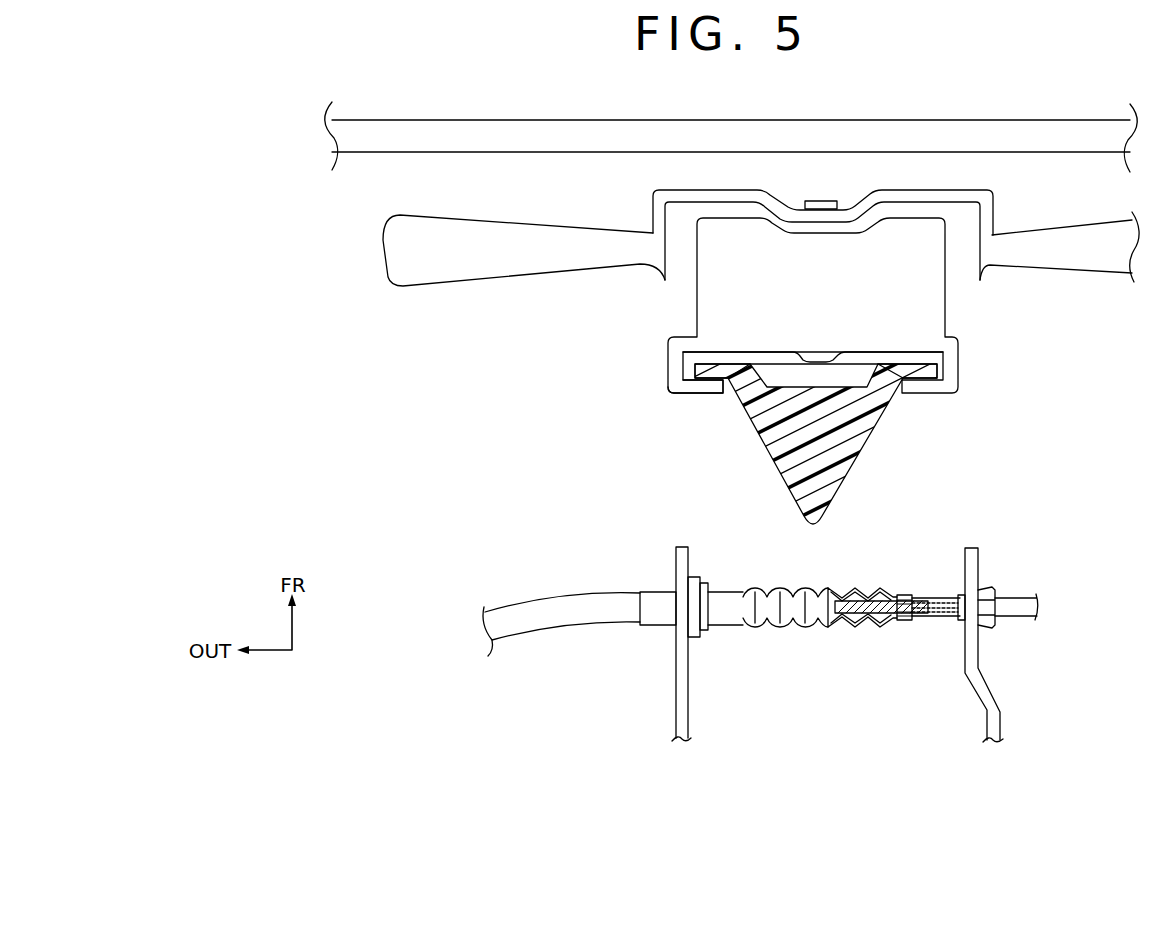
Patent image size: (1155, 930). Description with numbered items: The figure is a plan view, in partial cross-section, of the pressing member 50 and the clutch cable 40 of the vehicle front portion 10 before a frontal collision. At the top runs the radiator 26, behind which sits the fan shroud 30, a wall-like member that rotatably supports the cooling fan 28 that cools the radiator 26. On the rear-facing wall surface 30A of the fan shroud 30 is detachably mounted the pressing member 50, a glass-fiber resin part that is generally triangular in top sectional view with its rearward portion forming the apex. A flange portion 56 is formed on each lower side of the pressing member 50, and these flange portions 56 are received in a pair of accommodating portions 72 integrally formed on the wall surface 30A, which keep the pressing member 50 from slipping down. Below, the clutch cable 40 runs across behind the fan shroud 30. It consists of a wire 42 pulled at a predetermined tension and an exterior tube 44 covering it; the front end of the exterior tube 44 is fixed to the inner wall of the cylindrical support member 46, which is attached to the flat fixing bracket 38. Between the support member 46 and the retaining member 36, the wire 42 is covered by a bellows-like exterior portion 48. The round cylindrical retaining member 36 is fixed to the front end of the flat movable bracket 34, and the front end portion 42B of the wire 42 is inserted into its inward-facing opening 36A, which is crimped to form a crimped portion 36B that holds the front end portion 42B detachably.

The vehicle front portion 10 is at (1026, 446).
The radiator 26 is at (817, 121).
The cooling fan 28 is at (432, 265).
The fan shroud 30 is at (831, 316).
The wall surface 30A is at (778, 361).
The movable bracket 34 is at (977, 547).
The retaining member 36 is at (936, 619).
The opening 36A is at (887, 617).
The crimped portion 36B is at (911, 595).
The fixing bracket 38 is at (678, 546).
The clutch cable 40 is at (760, 609).
The wire 42 is at (893, 605).
The front end portion 42B is at (937, 598).
The exterior tube 44 is at (527, 622).
The support member 46 is at (655, 618).
The bellows-like exterior portion 48 is at (777, 628).
The pressing member 50 is at (808, 438).
The flange portion 56 is at (703, 370).
The accommodating portion 72 is at (707, 389).